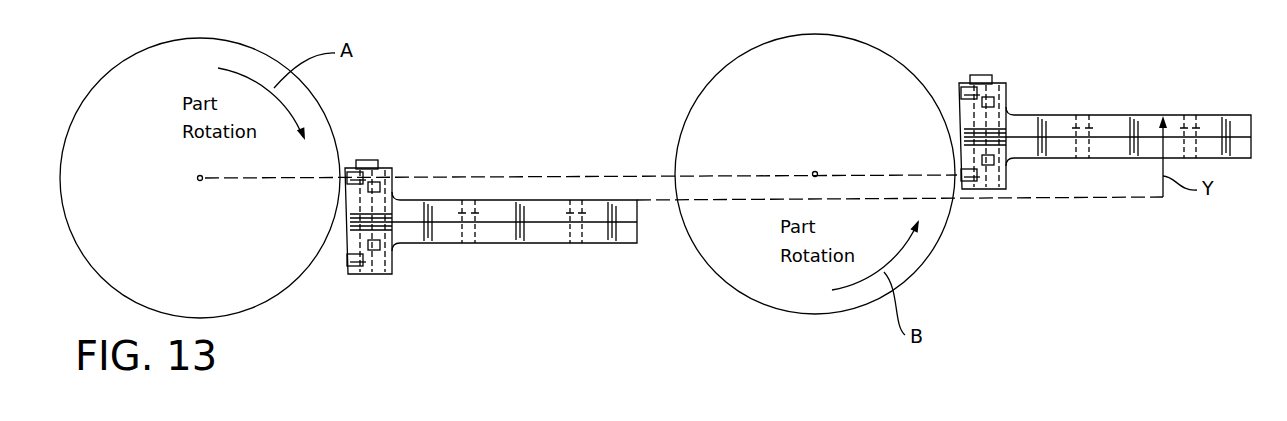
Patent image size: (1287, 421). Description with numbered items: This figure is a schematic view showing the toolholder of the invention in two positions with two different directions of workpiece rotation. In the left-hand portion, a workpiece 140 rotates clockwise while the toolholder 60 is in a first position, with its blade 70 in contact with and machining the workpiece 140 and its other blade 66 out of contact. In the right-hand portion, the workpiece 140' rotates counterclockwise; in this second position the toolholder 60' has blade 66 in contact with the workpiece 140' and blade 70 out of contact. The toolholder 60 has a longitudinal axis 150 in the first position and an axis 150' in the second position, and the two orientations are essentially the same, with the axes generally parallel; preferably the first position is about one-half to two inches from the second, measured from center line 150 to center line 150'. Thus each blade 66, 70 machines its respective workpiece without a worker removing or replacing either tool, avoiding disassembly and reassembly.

The workpiece 140 is at (239, 178).
The workpiece 140' is at (837, 172).
The blade 70 is at (338, 182).
The blade 66 is at (343, 274).
The toolholder 60 is at (518, 248).
The toolholder 60' is at (1144, 107).
The axis 150 is at (514, 246).
The axis 150' is at (1128, 111).